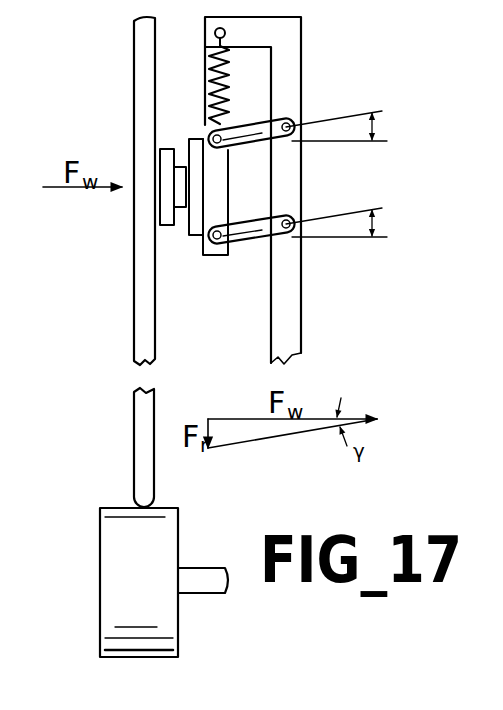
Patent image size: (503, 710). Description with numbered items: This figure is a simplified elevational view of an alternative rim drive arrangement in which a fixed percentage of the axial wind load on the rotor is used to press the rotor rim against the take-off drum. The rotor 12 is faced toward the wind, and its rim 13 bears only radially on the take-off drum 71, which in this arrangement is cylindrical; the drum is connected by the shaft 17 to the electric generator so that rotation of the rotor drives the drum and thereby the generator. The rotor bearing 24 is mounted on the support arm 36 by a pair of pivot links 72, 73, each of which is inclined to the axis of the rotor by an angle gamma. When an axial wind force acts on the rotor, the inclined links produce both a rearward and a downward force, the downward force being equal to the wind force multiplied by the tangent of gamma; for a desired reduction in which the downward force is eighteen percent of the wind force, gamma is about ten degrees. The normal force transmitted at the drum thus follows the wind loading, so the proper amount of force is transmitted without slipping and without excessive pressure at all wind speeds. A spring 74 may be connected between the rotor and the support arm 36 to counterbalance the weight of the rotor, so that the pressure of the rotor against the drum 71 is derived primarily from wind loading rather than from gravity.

The rotor 12 is at (93, 262).
The rim 13 is at (137, 293).
The shaft 17 is at (205, 597).
The rotor bearing 24 is at (195, 236).
The support arm 36 is at (297, 342).
The take-off drum 71 is at (167, 533).
The pivot link 72 is at (250, 143).
The pivot link 73 is at (243, 237).
The spring 74 is at (224, 82).